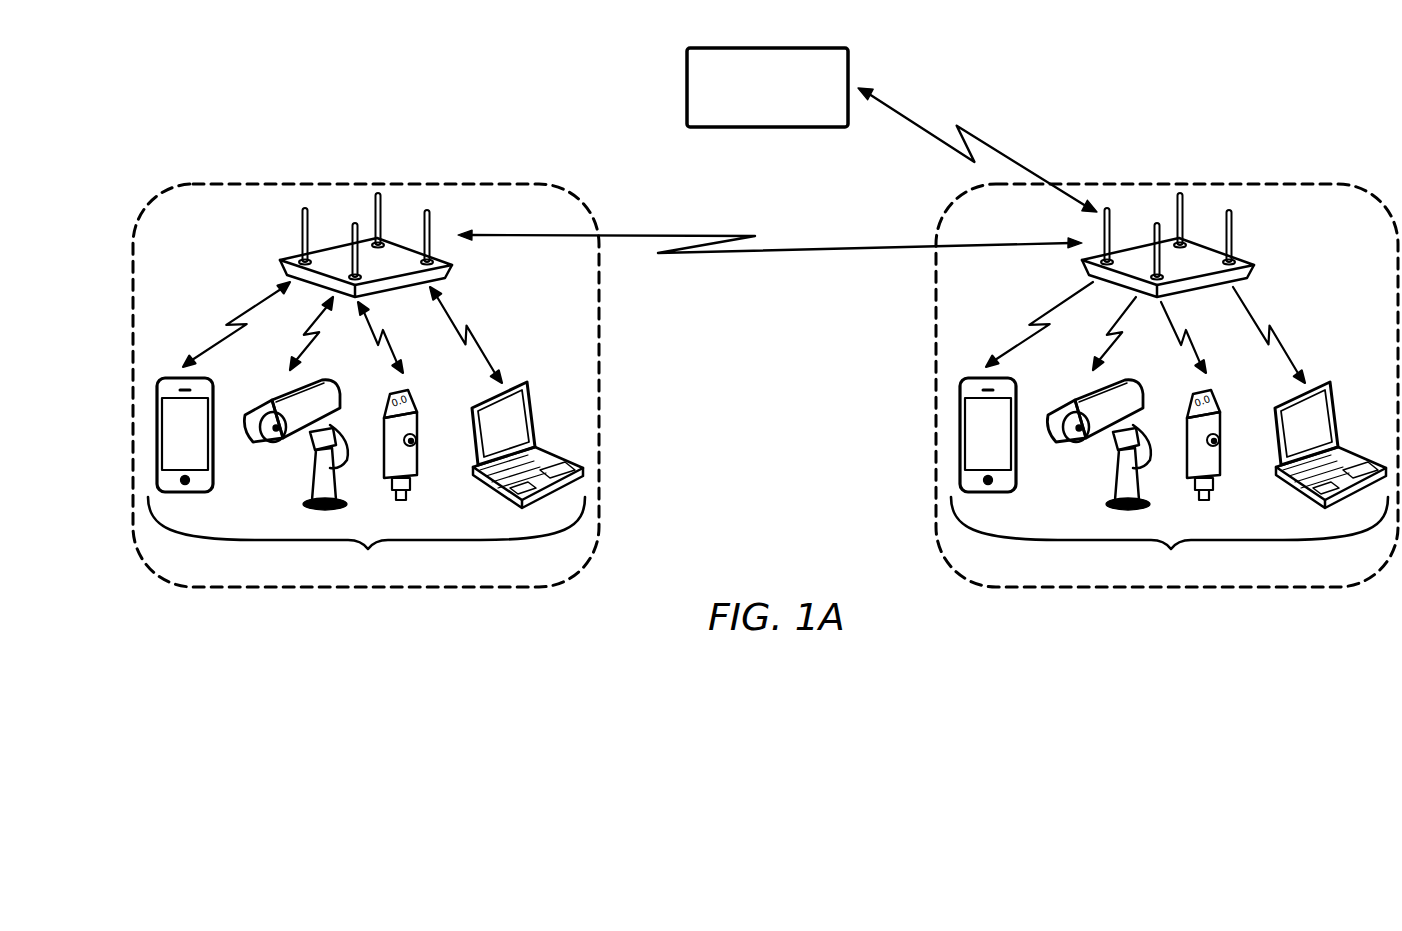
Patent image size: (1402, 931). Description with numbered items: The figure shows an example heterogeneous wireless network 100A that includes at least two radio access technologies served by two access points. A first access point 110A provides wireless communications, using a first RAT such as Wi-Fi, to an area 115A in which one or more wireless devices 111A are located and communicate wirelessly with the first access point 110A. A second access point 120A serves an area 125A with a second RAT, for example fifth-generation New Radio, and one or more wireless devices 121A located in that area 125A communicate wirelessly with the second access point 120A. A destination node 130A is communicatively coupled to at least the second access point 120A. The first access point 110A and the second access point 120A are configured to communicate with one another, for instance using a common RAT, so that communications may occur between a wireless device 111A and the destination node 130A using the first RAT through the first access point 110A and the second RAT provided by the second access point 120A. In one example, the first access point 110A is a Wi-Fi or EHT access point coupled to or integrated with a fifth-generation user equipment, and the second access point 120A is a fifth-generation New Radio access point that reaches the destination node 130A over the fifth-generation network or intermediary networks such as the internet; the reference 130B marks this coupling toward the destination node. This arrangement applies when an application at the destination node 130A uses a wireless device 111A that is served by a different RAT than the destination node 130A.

The wireless network 100A is at (1217, 60).
The first access point 110A is at (281, 260).
The wireless devices 111A is at (366, 428).
The area 115A is at (599, 308).
The second access point 120A is at (1249, 264).
The wireless devices 121A is at (1169, 431).
The area 125A is at (936, 326).
The destination node 130A is at (687, 87).
The destination node 130B is at (931, 150).